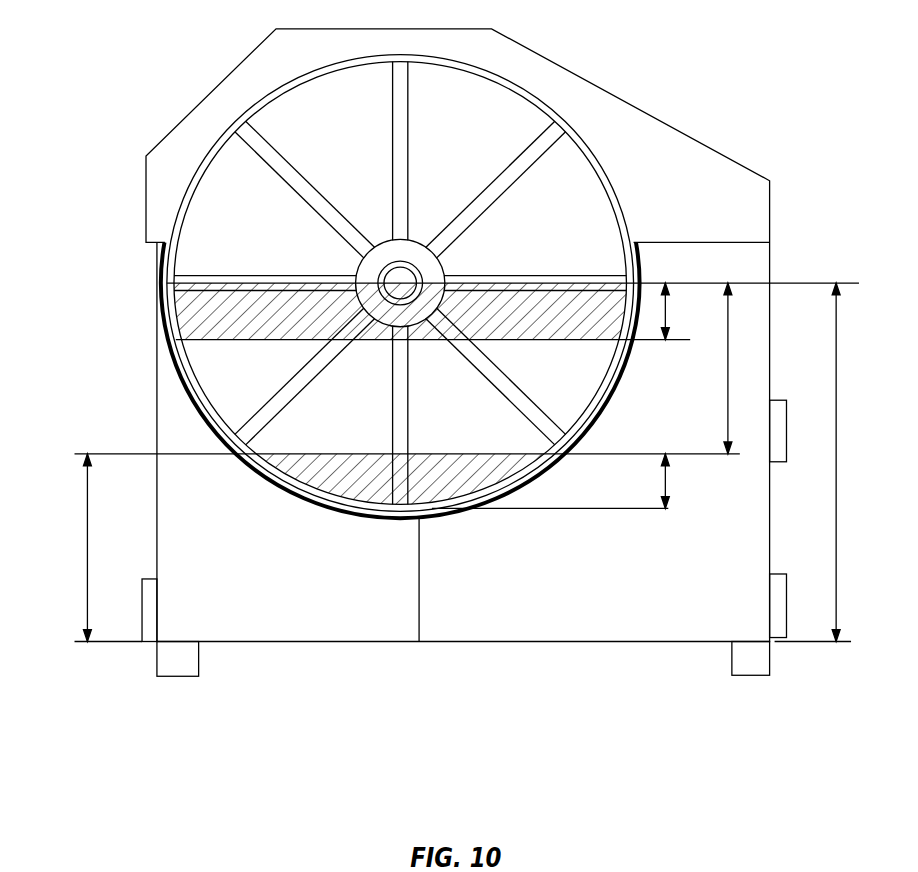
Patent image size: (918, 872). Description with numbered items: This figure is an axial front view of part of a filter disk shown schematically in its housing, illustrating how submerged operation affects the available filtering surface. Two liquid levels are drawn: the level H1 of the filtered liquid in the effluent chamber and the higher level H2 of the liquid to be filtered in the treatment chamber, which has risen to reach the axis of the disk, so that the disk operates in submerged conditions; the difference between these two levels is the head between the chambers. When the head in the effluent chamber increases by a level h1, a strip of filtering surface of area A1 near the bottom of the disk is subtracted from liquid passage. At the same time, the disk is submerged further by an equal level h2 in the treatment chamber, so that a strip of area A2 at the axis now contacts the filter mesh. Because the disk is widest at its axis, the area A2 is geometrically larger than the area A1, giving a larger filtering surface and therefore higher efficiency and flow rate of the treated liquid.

The area of liquid contacting the filter mesh in the treatment chamber A2 is at (513, 285).
The area of filtering surface subtracted from liquid passage A1 is at (452, 452).
The additional submersion level h2 is at (687, 311).
The level increase in the effluent chamber h1 is at (667, 476).
The level in the treatment chamber H2 is at (838, 456).
The level in the effluent chamber H1 is at (82, 532).